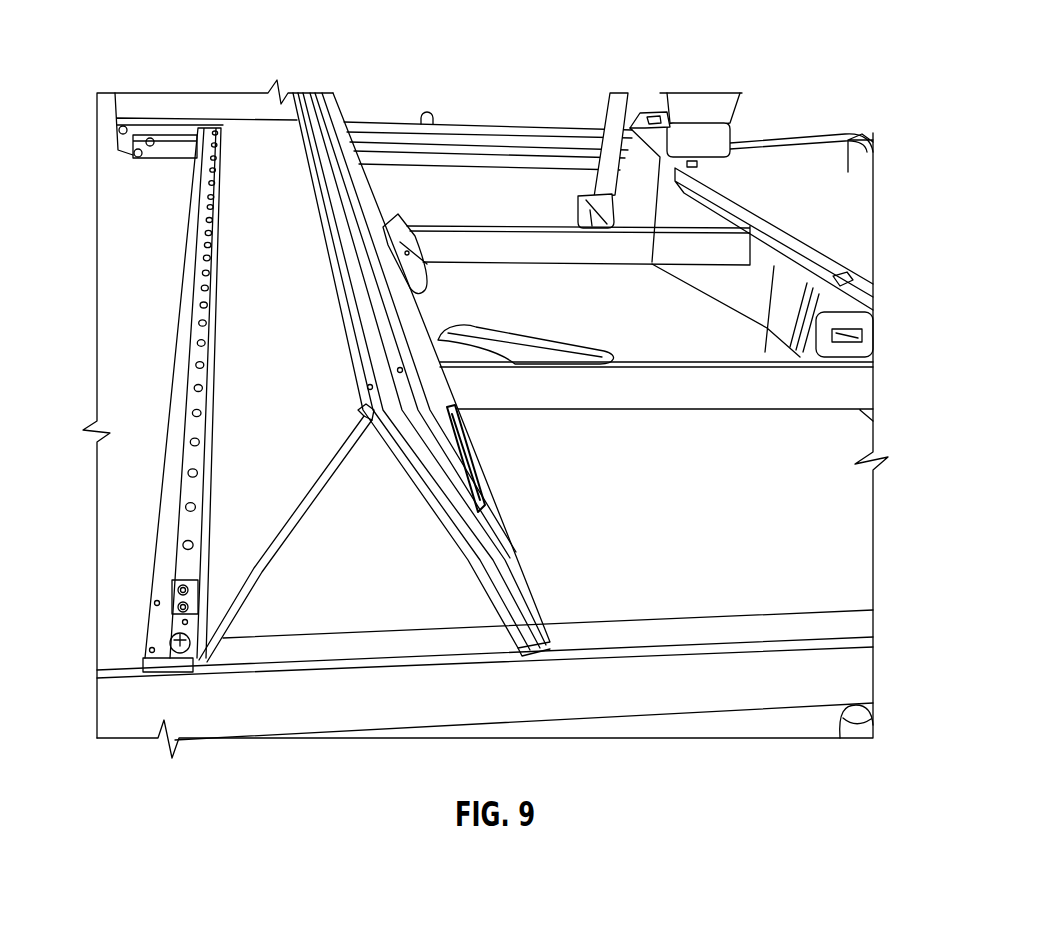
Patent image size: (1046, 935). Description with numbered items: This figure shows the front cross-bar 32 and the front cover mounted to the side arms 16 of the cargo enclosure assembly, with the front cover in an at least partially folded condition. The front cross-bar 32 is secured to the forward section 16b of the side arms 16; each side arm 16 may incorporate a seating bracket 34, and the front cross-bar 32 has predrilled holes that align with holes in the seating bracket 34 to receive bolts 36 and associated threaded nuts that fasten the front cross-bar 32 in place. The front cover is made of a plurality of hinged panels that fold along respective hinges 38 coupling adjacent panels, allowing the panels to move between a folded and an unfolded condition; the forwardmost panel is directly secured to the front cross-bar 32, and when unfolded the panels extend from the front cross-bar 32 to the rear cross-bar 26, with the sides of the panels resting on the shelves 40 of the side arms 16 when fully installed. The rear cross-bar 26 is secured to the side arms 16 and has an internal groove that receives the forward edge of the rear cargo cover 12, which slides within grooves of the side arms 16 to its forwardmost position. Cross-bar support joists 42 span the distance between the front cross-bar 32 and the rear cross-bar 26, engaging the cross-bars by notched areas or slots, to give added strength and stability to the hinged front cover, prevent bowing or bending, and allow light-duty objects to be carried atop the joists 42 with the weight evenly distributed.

The rear cargo cover 12 is at (860, 228).
The side arms 16 is at (862, 662).
The forward section 16b is at (318, 650).
The rear cross-bar 26 is at (867, 307).
The front cross-bar 32 is at (197, 280).
The seating bracket 34 is at (168, 625).
The bolts 36 is at (175, 647).
The hinges 38 is at (303, 148).
The shelves 40 is at (560, 142).
The cross-bar support joists 42 is at (723, 252).